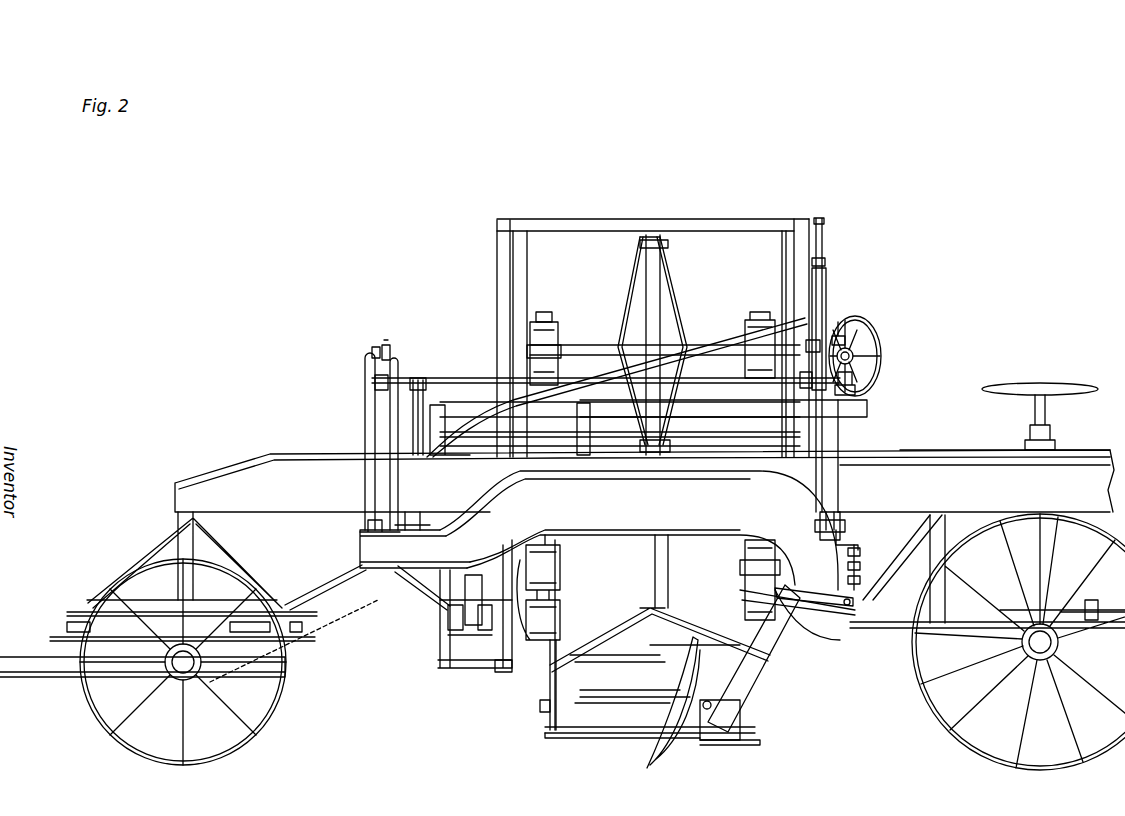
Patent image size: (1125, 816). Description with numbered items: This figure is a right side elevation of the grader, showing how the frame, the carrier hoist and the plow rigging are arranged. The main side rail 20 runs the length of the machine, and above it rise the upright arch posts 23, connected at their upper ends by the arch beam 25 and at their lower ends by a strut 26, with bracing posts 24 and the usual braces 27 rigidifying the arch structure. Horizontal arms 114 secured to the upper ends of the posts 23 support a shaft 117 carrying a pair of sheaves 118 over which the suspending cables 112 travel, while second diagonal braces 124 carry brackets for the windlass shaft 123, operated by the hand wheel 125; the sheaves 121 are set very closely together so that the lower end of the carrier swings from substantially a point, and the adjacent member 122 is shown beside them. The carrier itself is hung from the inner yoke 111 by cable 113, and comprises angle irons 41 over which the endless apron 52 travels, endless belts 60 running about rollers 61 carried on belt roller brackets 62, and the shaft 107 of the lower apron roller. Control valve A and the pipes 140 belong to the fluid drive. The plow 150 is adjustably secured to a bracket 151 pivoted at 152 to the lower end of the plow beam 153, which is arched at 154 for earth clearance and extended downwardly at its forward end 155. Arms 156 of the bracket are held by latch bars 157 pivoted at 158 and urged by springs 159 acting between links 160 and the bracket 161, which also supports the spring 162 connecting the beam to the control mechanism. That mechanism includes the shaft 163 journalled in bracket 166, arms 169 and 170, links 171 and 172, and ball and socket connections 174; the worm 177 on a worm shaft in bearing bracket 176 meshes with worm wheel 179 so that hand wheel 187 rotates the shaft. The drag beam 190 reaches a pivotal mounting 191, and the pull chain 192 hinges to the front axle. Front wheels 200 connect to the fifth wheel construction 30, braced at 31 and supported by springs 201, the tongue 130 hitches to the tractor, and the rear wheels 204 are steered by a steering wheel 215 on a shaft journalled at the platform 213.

The main side rail 20 is at (644, 481).
The platform 213 is at (975, 445).
The steering wheel 215 is at (1065, 372).
The upright arch post 23 is at (497, 266).
The laterally projecting arm 114 is at (525, 222).
The second diagonal brace 124 is at (527, 264).
The arch beam 25 is at (655, 232).
The suspending cable 112 is at (675, 300).
The shaft 117 is at (600, 236).
The sheave 118 is at (668, 245).
The pipe 140 is at (826, 219).
The control valve A is at (830, 280).
The roller 61 is at (560, 330).
The belt roller bracket 62 is at (544, 312).
The bearing bracket 176 is at (812, 340).
The windlass shaft 123 is at (585, 352).
The shaft 163 is at (452, 378).
The cross bar 122 is at (575, 445).
The sheave 121 is at (630, 445).
The hand wheel 125 is at (868, 322).
The hand wheel 187 is at (880, 344).
The worm 177 is at (876, 355).
The worm wheel 179 is at (870, 392).
The link 171 is at (400, 360).
The link 172 is at (365, 362).
The bracket 166 is at (360, 405).
The arm 170 is at (376, 347).
The arm 169 is at (386, 345).
The arch 154 is at (639, 530).
The forward end 155 is at (415, 549).
The ball and socket connection 174 is at (420, 512).
The spring 162 is at (358, 515).
The drag beam 190 is at (472, 575).
The pivotal mounting 191 is at (455, 665).
The strut 26 is at (472, 670).
The bracing post 24 is at (440, 640).
The brace 27 is at (422, 608).
The endless belt 60 is at (565, 592).
The suspending cable 113 is at (652, 580).
The inner yoke 111 is at (612, 616).
The endless apron 52 is at (650, 686).
The shaft 107 is at (540, 706).
The angle iron 41 is at (552, 736).
The plow beam 153 is at (770, 670).
The plow 150 is at (640, 750).
The bracket 151 is at (700, 725).
The pivot 152 is at (750, 738).
The arm 156 is at (800, 655).
The latch bar 157 is at (820, 640).
The pivot 158 is at (845, 612).
The link 160 is at (862, 598).
The bracket 161 is at (864, 580).
The spring 159 is at (856, 545).
The spring 201 is at (92, 600).
The brace 31 is at (345, 585).
The fifth wheel construction 30 is at (65, 625).
The tongue 130 is at (22, 680).
The pull chain 192 is at (330, 650).
The front wheel 200 is at (285, 702).
The rear wheel 204 is at (945, 736).